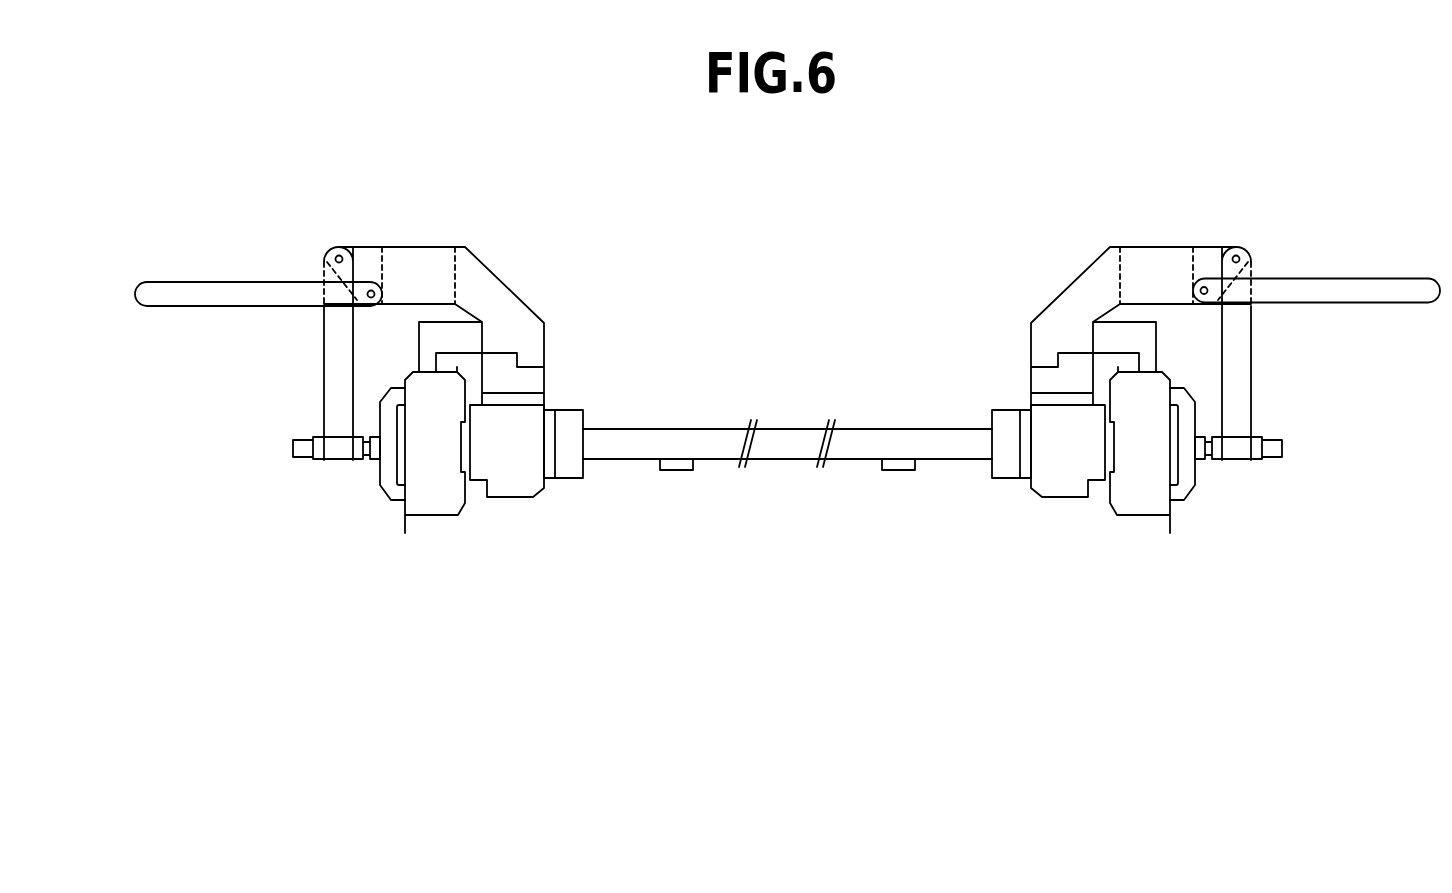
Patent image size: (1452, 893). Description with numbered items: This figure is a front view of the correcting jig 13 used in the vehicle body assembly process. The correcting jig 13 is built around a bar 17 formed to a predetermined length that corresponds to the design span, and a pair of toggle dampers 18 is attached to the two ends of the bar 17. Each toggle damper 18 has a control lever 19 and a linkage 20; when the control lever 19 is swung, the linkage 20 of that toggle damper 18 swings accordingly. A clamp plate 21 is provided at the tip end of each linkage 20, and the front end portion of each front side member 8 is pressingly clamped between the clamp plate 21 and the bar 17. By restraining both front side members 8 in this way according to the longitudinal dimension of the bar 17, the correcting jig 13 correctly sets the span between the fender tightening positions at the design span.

The front side member 8 is at (457, 500).
The correcting jig 13 is at (852, 472).
The bar 17 is at (698, 435).
The toggle damper 18 is at (512, 279).
The control lever 19 is at (227, 282).
The linkage 20 is at (330, 352).
The clamp plate 21 is at (386, 473).